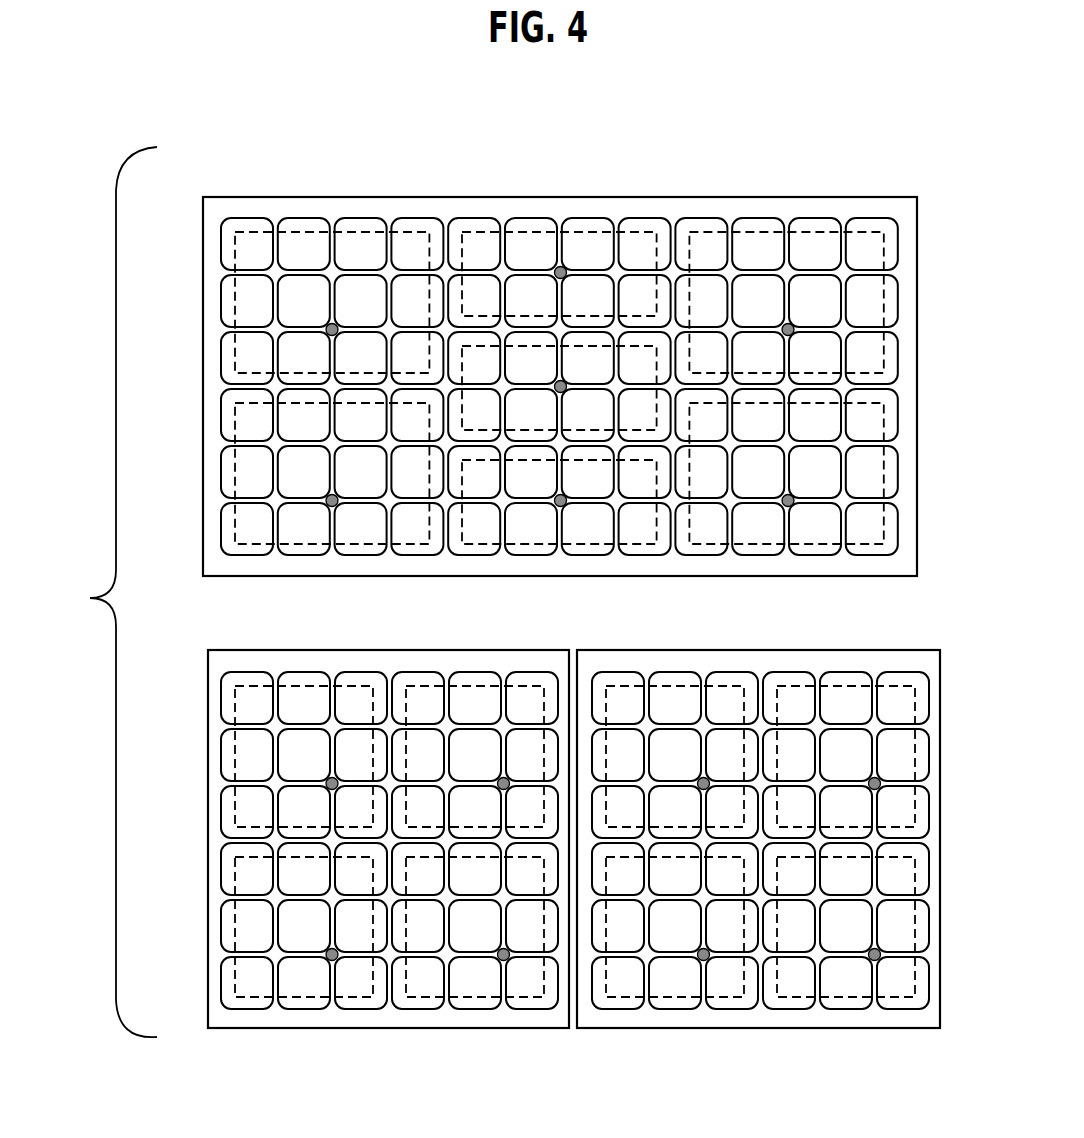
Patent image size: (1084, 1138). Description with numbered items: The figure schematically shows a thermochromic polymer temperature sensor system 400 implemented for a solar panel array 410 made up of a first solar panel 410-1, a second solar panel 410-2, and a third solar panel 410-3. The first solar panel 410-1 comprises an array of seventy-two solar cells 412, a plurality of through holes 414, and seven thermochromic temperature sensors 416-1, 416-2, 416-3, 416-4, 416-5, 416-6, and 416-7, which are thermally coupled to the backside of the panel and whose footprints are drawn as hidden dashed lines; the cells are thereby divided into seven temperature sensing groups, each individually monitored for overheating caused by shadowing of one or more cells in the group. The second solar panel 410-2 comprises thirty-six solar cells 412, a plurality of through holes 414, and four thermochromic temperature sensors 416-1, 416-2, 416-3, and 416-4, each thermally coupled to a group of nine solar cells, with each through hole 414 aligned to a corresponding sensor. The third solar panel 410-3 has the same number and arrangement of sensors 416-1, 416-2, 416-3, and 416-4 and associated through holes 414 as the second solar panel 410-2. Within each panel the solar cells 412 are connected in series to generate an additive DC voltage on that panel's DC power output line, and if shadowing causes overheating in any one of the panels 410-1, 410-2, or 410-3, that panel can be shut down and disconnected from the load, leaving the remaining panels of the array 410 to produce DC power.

The thermochromic polymer temperature sensor system 400 is at (526, 88).
The solar panel array 410 is at (89, 598).
The first solar panel 410-1 is at (219, 197).
The second solar panel 410-2 is at (220, 650).
The third solar panel 410-3 is at (622, 650).
The solar cells 412 is at (366, 218).
The through holes 414 is at (556, 271).
The thermochromic temperature sensor 416-1 is at (236, 297).
The thermochromic temperature sensor 416-2 is at (486, 232).
The thermochromic temperature sensor 416-3 is at (646, 346).
The thermochromic temperature sensor 416-4 is at (887, 288).
The thermochromic temperature sensor 416-5 is at (236, 468).
The thermochromic temperature sensor 416-6 is at (485, 544).
The thermochromic temperature sensor 416-7 is at (887, 468).